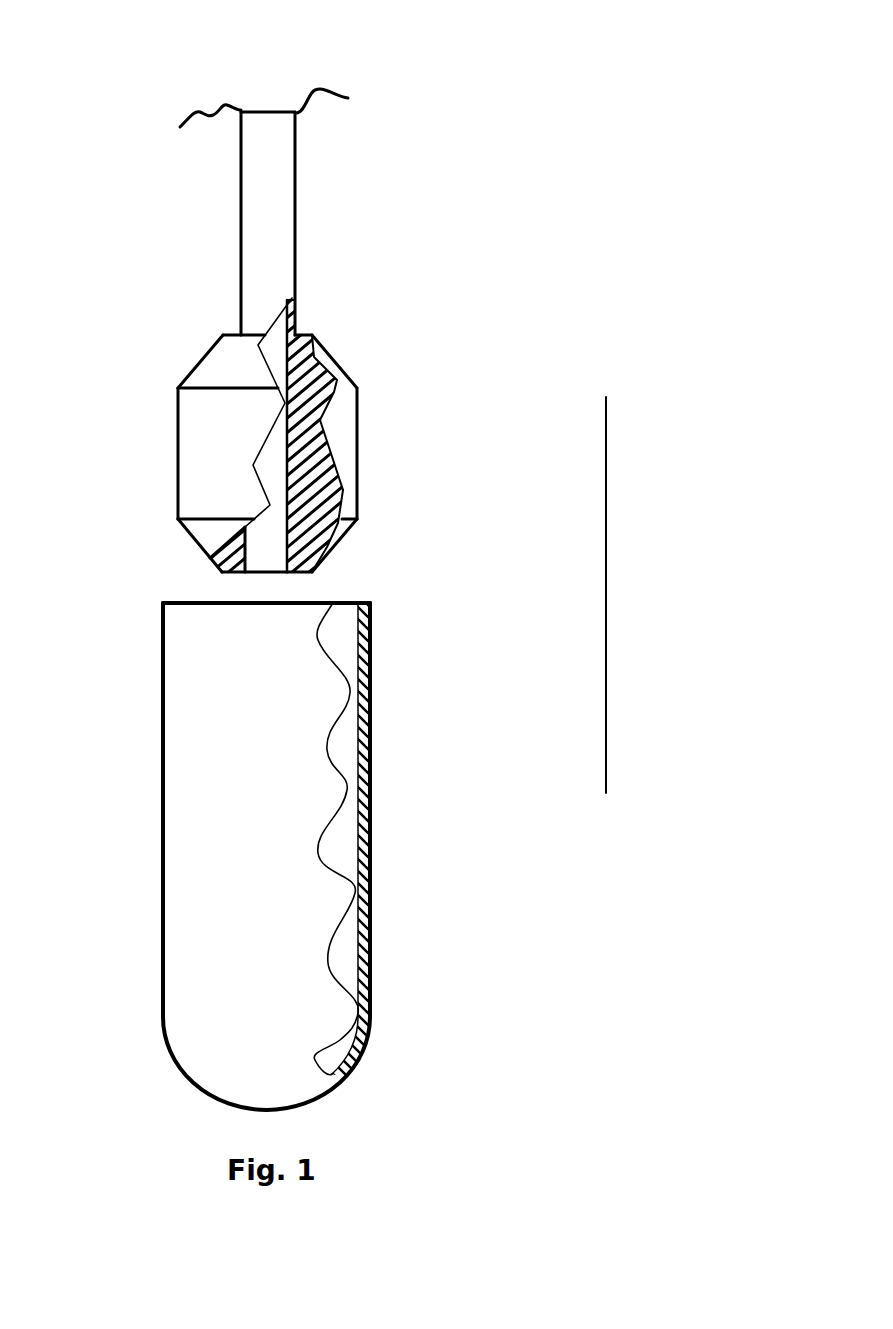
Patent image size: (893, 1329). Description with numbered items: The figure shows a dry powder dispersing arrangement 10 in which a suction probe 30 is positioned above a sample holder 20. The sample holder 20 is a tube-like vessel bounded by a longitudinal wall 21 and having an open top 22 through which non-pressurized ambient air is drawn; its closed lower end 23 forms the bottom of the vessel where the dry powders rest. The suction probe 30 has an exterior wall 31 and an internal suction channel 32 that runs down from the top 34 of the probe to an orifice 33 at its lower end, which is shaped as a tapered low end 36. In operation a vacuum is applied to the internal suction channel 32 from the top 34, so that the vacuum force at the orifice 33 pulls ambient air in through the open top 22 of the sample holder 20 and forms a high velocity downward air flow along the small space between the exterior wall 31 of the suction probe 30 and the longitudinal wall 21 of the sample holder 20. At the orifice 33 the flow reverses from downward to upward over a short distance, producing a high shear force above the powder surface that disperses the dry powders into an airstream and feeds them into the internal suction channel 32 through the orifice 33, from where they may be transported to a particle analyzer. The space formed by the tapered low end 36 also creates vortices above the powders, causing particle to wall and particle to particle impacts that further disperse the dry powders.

The sample container assembly 10 is at (606, 558).
The sample holder 20 is at (157, 890).
The longitudinal wall 21 is at (360, 857).
The open top 22 is at (348, 597).
The tube bottom 23 is at (333, 1090).
The suction probe 30 is at (200, 460).
The exterior wall 31 is at (358, 460).
The internal suction channel 32 is at (273, 460).
The orifice 33 is at (266, 573).
The top 34 is at (280, 110).
The tapered low end 36 is at (335, 552).